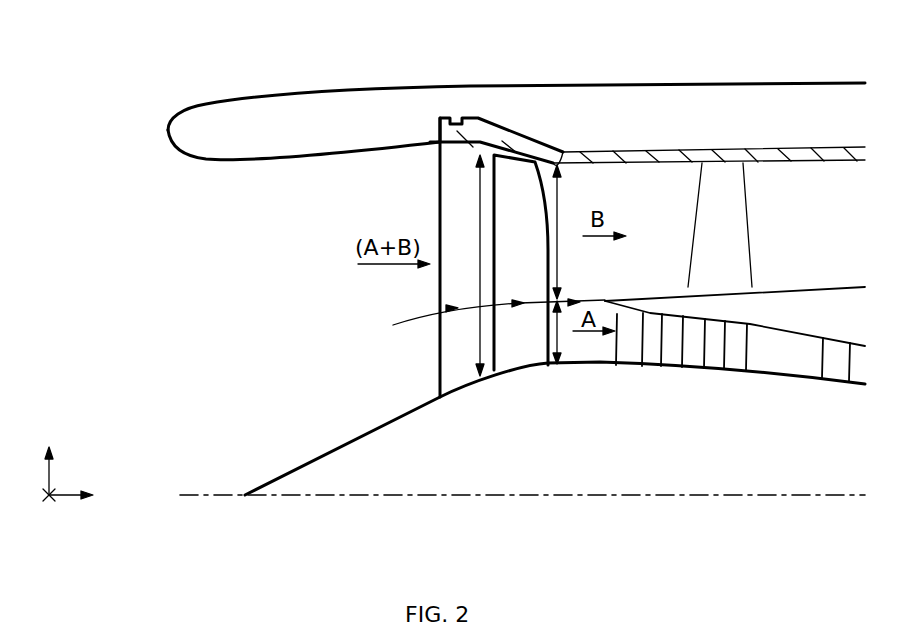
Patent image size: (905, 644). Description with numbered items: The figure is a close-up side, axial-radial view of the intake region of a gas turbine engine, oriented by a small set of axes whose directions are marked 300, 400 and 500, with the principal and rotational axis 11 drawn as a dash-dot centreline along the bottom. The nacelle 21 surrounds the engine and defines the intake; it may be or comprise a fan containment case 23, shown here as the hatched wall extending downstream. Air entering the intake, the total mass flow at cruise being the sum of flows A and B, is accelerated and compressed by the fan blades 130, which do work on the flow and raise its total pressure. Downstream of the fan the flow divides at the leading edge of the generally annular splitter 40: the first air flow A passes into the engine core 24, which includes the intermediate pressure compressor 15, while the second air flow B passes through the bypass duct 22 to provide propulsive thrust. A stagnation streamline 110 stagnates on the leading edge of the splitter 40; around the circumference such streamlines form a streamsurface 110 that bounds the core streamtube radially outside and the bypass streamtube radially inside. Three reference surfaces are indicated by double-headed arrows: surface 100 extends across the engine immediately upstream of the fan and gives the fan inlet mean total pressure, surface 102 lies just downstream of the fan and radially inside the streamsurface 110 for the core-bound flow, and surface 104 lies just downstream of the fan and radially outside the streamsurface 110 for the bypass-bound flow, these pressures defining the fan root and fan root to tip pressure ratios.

The principal and rotational axis 11 is at (210, 495).
The intermediate pressure compressor 15 is at (717, 316).
The nacelle 21 is at (708, 102).
The bypass duct 22 is at (796, 226).
The fan containment case 23 is at (731, 150).
The engine core 24 is at (710, 392).
The splitter 40 is at (605, 300).
The surface at fan inlet 100 is at (478, 176).
The surface at fan exit radially inside streamsurface 102 is at (558, 347).
The surface at fan exit radially outside streamsurface 104 is at (558, 188).
The stagnation streamline 110 is at (415, 326).
The fan blades 130 is at (512, 172).
The axial direction 300 is at (94, 496).
The radial direction 400 is at (53, 455).
The circumferential direction 500 is at (53, 513).